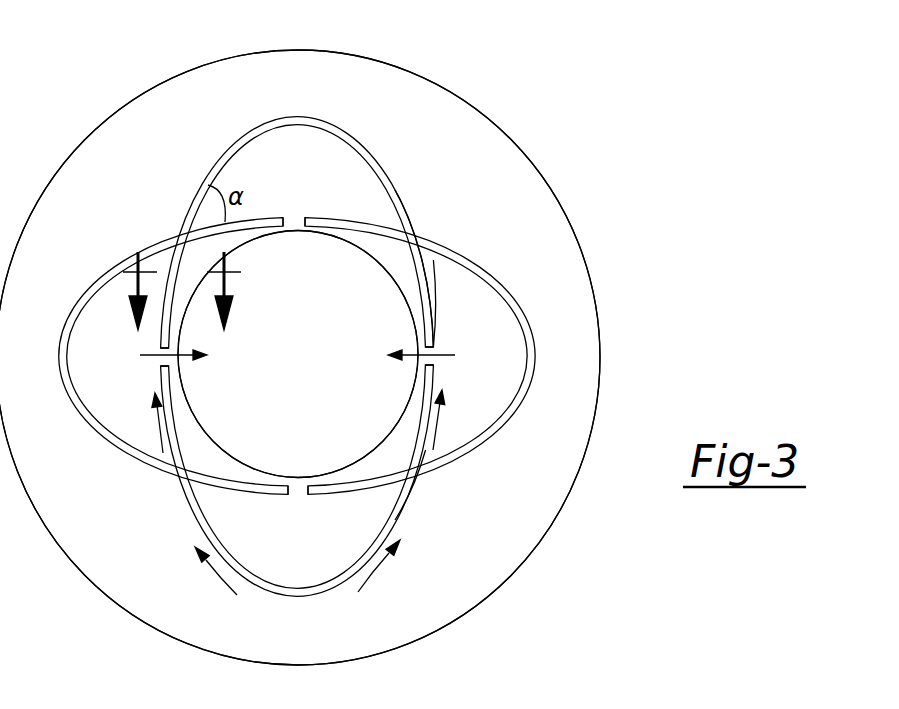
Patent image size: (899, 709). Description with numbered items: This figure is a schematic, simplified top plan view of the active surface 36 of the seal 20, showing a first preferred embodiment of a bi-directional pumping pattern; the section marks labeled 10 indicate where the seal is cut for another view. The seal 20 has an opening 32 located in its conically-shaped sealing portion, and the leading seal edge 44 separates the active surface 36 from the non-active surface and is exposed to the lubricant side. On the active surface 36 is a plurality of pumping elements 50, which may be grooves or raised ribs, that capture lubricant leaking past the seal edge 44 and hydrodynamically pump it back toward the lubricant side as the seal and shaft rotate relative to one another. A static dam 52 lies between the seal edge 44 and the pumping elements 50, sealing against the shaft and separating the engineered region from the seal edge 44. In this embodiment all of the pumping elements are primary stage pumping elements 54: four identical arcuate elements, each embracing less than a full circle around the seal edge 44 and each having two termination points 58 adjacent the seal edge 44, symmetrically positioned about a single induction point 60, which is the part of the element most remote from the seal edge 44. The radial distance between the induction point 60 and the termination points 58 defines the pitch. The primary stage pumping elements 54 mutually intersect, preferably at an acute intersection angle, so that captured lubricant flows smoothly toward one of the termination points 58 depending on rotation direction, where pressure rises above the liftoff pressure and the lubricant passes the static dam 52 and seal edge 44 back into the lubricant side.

The section line 10 is at (179, 294).
The seal 20 is at (600, 135).
The opening 32 is at (311, 370).
The active surface 36 is at (562, 375).
The seal edge 44 is at (204, 440).
The pumping elements 50 is at (437, 244).
The static dam 52 is at (304, 236).
The primary stage pumping elements 54 is at (478, 272).
The termination points 58 is at (316, 222).
The induction point 60 is at (290, 116).